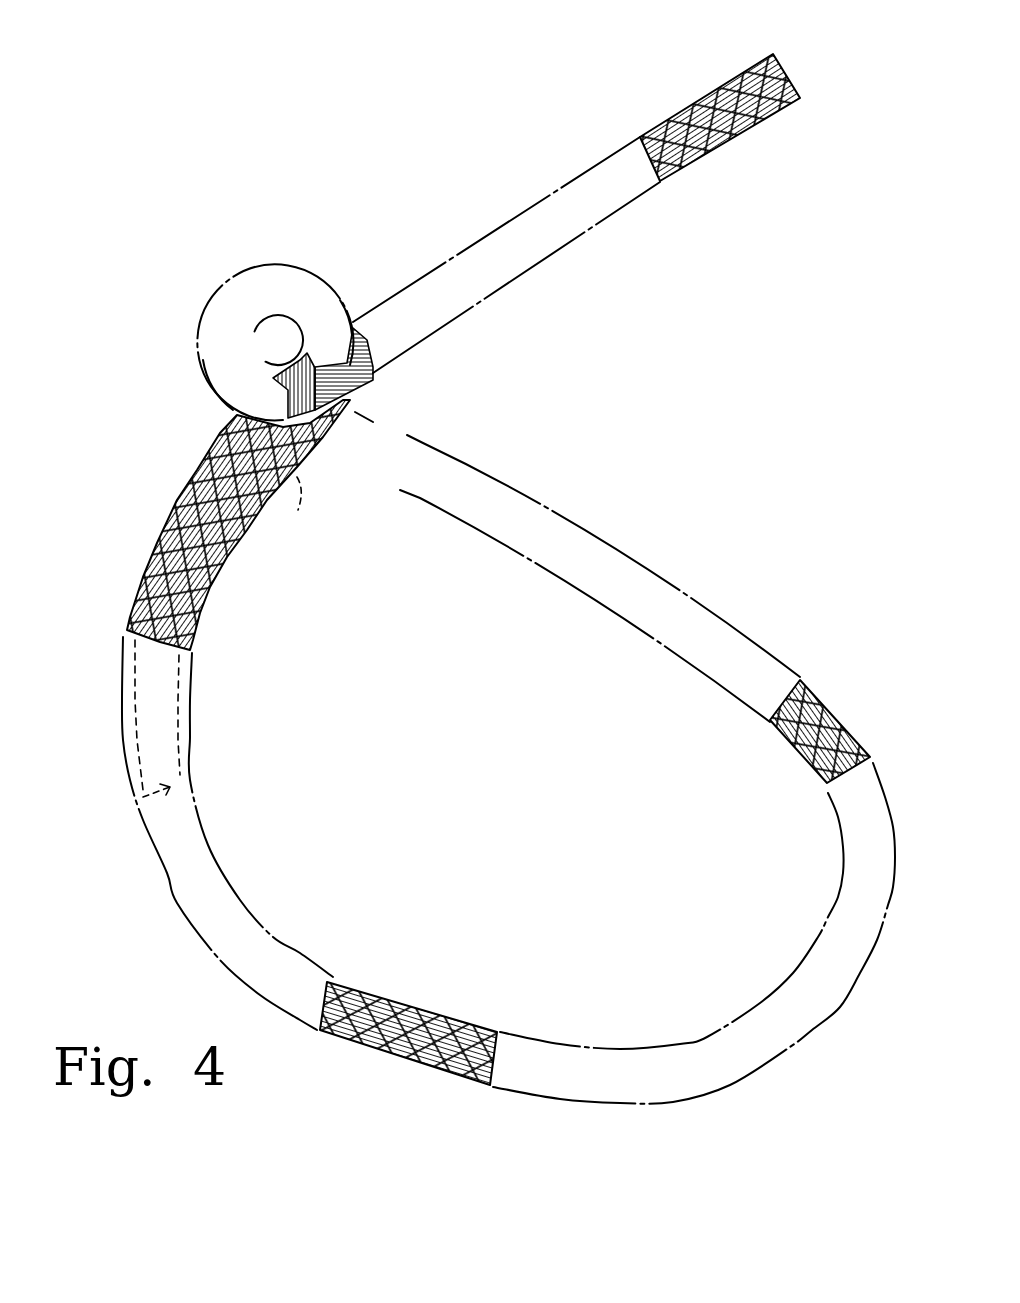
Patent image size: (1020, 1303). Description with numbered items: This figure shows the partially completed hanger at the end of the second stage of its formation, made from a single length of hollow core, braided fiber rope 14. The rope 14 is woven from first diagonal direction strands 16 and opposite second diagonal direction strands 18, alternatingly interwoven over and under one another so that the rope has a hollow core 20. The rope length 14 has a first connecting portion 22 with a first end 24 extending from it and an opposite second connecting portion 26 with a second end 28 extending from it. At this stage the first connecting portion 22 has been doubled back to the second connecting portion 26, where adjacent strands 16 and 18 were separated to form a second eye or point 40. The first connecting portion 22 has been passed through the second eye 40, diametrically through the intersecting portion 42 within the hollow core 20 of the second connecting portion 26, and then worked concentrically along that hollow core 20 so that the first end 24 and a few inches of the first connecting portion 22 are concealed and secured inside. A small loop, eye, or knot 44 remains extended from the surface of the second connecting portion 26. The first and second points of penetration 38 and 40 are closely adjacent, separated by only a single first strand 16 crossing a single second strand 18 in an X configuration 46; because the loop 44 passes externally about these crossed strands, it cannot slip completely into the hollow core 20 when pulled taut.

The braided fiber rope 14 is at (181, 952).
The first diagonal direction strands 16 is at (773, 115).
The second diagonal direction strands 18 is at (706, 75).
The hollow core 20 is at (137, 803).
The first connecting portion 22 is at (190, 467).
The first end 24 is at (183, 740).
The second connecting portion 26 is at (220, 427).
The second end 28 is at (800, 85).
The first point of penetration 38 is at (217, 373).
The second eye or point 40 is at (338, 320).
The intersecting portion 42 is at (297, 495).
The small loop, eye, or knot 44 is at (218, 290).
The X configuration 46 is at (288, 367).